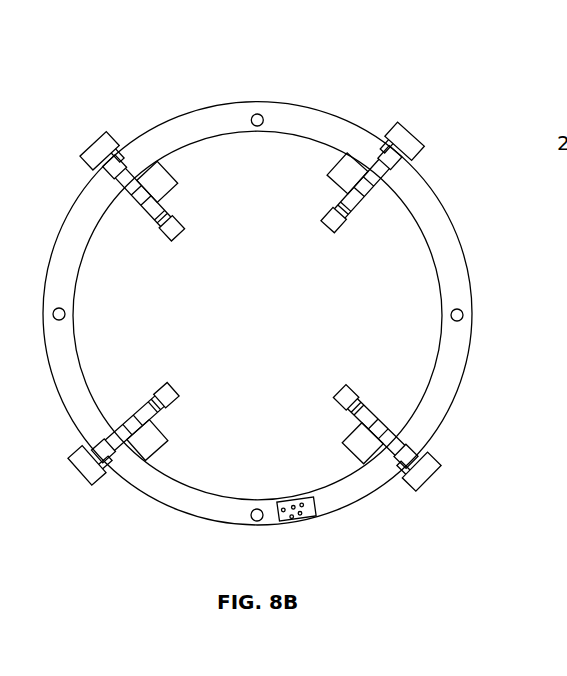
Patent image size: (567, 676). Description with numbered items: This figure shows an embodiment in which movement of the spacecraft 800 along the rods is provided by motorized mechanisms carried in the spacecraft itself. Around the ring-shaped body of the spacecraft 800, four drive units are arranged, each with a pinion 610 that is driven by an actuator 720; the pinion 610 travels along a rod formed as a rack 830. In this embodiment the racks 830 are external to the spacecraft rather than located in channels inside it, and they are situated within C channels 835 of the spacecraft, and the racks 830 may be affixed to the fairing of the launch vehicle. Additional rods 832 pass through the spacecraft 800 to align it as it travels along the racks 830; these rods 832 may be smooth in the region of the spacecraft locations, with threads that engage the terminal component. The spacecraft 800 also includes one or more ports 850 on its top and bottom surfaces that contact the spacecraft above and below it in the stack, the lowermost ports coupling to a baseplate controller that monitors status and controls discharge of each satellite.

The spacecraft 800 is at (407, 93).
The rack 830 is at (114, 140).
The rod 832 is at (261, 116).
The C channel 835 is at (401, 165).
The pinion 610 is at (157, 408).
The actuator 720 is at (162, 443).
The port 850 is at (302, 519).